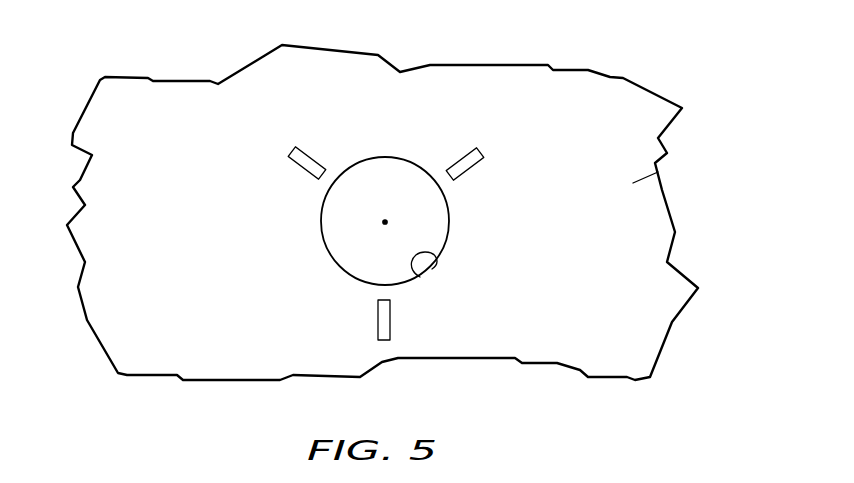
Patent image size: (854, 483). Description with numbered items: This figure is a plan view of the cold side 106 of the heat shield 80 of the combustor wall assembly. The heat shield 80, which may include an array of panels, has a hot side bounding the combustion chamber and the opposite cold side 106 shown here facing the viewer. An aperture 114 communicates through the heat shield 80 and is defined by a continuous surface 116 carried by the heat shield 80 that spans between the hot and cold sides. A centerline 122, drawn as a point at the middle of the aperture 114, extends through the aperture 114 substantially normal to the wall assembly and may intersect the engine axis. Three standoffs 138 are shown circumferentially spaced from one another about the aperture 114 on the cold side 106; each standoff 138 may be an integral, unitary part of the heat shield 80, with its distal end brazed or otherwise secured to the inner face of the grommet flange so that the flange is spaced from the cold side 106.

The heat shield 80 is at (634, 73).
The cold side 106 is at (658, 172).
The aperture 114 is at (400, 202).
The centerline 122 is at (385, 222).
The continuous surface 116 is at (432, 269).
The standoffs 138 is at (306, 155).